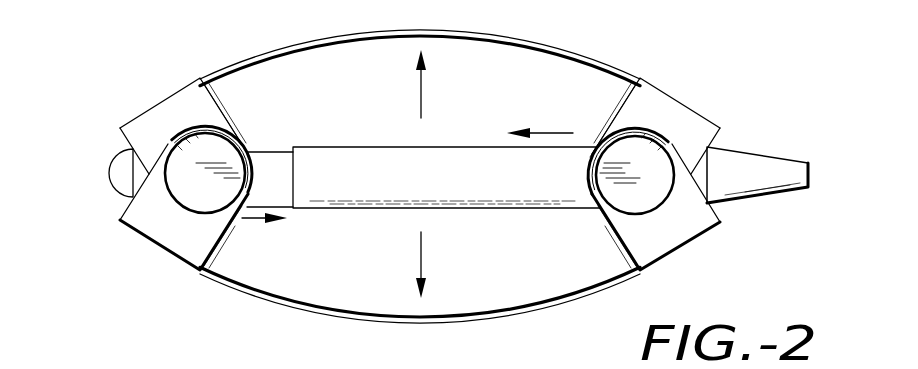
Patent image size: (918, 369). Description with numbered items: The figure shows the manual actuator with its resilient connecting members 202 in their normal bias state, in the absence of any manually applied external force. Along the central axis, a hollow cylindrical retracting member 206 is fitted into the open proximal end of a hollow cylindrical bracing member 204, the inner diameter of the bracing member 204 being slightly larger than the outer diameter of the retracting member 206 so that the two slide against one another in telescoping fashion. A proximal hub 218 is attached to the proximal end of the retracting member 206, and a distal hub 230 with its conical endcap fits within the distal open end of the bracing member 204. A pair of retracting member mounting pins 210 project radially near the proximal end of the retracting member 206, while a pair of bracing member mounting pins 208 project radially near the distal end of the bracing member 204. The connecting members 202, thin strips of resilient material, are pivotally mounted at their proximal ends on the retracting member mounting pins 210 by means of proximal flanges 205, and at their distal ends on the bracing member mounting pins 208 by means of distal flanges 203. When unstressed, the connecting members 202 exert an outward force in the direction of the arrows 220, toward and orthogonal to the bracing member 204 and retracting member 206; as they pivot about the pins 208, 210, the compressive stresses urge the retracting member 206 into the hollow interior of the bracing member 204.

The resilient connecting members 202 is at (594, 59).
The distal flanges 203 is at (660, 113).
The bracing member 204 is at (342, 208).
The proximal flanges 205 is at (172, 117).
The retracting member 206 is at (273, 150).
The bracing member mounting pins 208 is at (636, 203).
The retracting member mounting pins 210 is at (193, 202).
The proximal hub 218 is at (118, 180).
The arrows 220 is at (422, 102).
The distal hub 230 is at (755, 170).